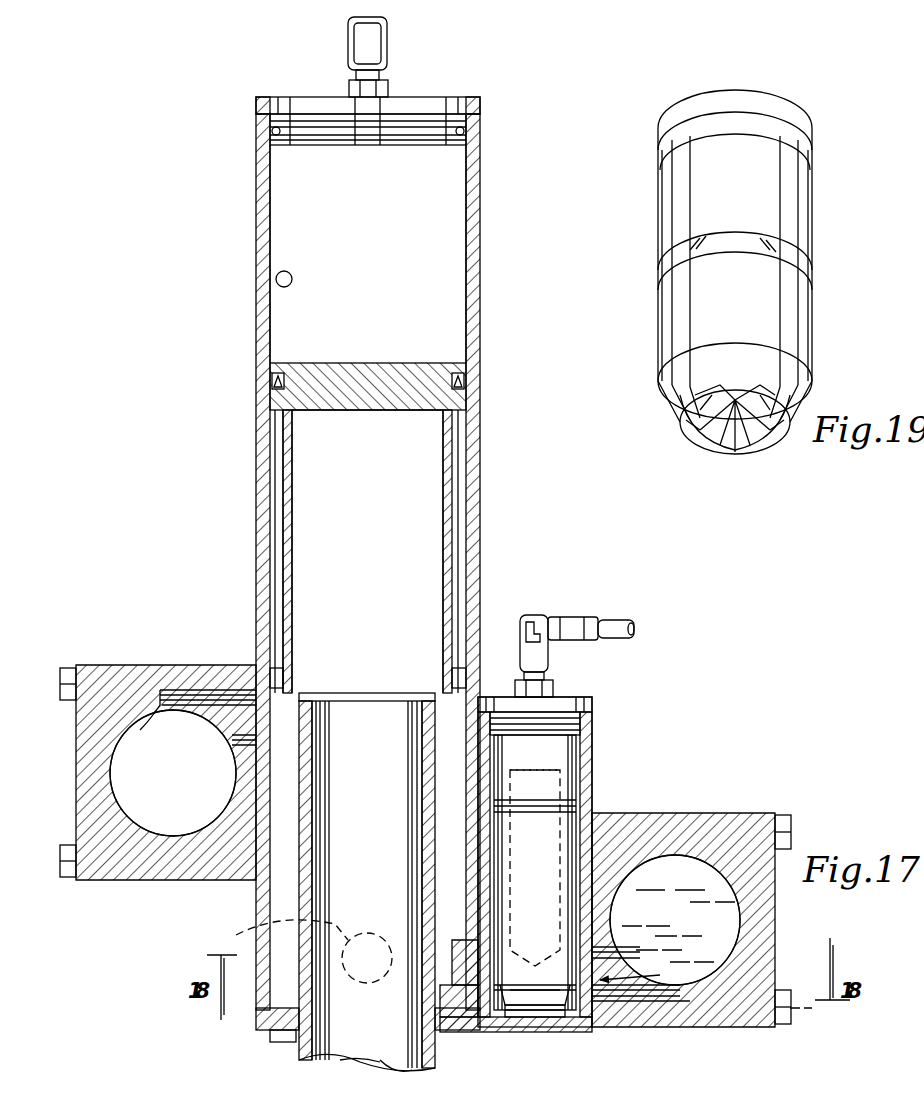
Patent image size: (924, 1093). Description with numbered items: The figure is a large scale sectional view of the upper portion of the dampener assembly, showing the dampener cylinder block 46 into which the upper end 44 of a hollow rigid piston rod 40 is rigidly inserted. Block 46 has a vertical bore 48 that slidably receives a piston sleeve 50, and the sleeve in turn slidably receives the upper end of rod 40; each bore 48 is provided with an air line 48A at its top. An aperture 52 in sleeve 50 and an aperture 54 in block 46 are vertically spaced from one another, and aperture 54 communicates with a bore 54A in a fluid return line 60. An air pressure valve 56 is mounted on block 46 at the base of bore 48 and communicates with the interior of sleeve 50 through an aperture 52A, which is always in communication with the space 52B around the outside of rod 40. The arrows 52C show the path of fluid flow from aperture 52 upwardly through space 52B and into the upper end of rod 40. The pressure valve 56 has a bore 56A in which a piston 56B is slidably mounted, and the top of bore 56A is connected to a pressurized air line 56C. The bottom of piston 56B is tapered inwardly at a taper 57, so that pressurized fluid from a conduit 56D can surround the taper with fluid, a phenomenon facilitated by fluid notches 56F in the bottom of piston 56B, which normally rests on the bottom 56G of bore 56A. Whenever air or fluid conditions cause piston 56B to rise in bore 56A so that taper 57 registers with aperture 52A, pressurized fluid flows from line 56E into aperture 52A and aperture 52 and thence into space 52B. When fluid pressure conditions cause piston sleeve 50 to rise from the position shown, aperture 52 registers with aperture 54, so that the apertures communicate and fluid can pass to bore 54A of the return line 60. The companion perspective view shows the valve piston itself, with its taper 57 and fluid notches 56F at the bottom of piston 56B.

In FIG. 17, the hollow rigid piston rod 40 is at (392, 1068).
In FIG. 17, the upper end of rod 44 is at (276, 660).
In FIG. 17, the dampener cylinder block 46 is at (262, 268).
In FIG. 17, the vertical bore 48 is at (278, 281).
In FIG. 17, the air line 48A is at (358, 40).
In FIG. 17, the piston sleeve 50 is at (280, 590).
In FIG. 17, the aperture 52 is at (258, 920).
In FIG. 17, the aperture 52A is at (470, 1030).
In FIG. 17, the space 52B is at (410, 860).
In FIG. 17, the arrows 52C is at (410, 710).
In FIG. 17, the aperture 54 is at (218, 665).
In FIG. 17, the bore 54A is at (178, 820).
In FIG. 17, the air pressure valve 56 is at (600, 750).
In FIG. 17, the bore 56A is at (546, 768).
In FIG. 17, the piston 56B is at (545, 815).
In FIG. 19, the piston 56B is at (818, 198).
In FIG. 17, the pressurized air line 56C is at (626, 637).
In FIG. 17, the conduit 56D is at (592, 1025).
In FIG. 17, the line 56E is at (728, 815).
In FIG. 17, the fluid notches 56F is at (620, 1060).
In FIG. 19, the fluid notches 56F is at (775, 455).
In FIG. 17, the bottom of bore 56G is at (545, 1000).
In FIG. 17, the taper 57 is at (575, 1020).
In FIG. 19, the taper 57 is at (685, 420).
In FIG. 17, the fluid return line 60 is at (468, 972).